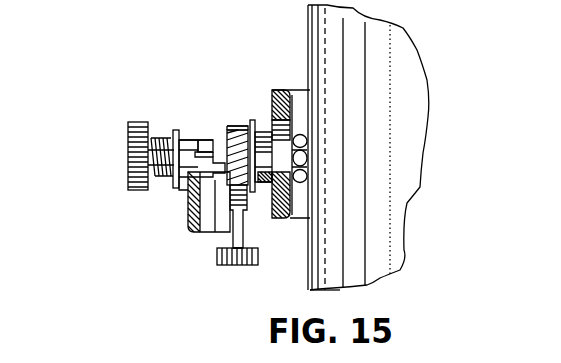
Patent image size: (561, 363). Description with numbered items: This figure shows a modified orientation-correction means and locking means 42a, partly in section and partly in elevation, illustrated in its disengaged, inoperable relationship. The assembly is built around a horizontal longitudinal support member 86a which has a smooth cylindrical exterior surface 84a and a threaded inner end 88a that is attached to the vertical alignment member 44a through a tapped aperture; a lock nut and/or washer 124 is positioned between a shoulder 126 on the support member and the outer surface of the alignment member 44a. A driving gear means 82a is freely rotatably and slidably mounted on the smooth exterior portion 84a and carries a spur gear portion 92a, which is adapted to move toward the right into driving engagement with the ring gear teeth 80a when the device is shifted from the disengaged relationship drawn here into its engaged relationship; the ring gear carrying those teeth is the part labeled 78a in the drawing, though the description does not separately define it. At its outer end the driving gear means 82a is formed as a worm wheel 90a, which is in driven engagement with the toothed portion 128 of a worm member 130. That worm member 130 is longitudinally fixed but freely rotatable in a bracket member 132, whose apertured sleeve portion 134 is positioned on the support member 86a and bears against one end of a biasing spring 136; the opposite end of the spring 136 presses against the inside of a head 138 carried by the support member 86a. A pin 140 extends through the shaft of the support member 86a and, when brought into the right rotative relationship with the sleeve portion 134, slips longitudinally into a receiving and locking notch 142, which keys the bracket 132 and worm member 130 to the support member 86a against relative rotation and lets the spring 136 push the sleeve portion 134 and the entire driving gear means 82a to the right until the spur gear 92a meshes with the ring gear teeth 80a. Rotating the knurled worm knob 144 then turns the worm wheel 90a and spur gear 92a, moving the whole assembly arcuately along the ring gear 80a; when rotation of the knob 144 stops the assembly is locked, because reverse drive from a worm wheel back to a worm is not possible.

The head 138 is at (138, 122).
The biasing spring 136 is at (151, 138).
The orientation-correction means and locking means 42a is at (184, 118).
The pin 140 is at (200, 175).
The apertured sleeve portion 134 is at (188, 140).
The receiving and locking notch 142 is at (203, 142).
The toothed portion 128 is at (233, 185).
The horizontal longitudinal support member 86a is at (221, 128).
The worm wheel 90a is at (238, 130).
The driving gear means 82a is at (245, 116).
The ring gear teeth 80a is at (290, 92).
The bracket 78a is at (283, 90).
The smooth cylindrical exterior surface 84a is at (280, 210).
The spur gear portion 92a is at (262, 190).
The shoulder 126 is at (308, 138).
The threaded inner end 88a is at (310, 178).
The lock nut and/or washer 124 is at (305, 187).
The vertical alignment member 44a is at (310, 290).
The worm member 130 is at (221, 182).
The bracket member 132 is at (217, 222).
The knurled worm knob 144 is at (218, 263).